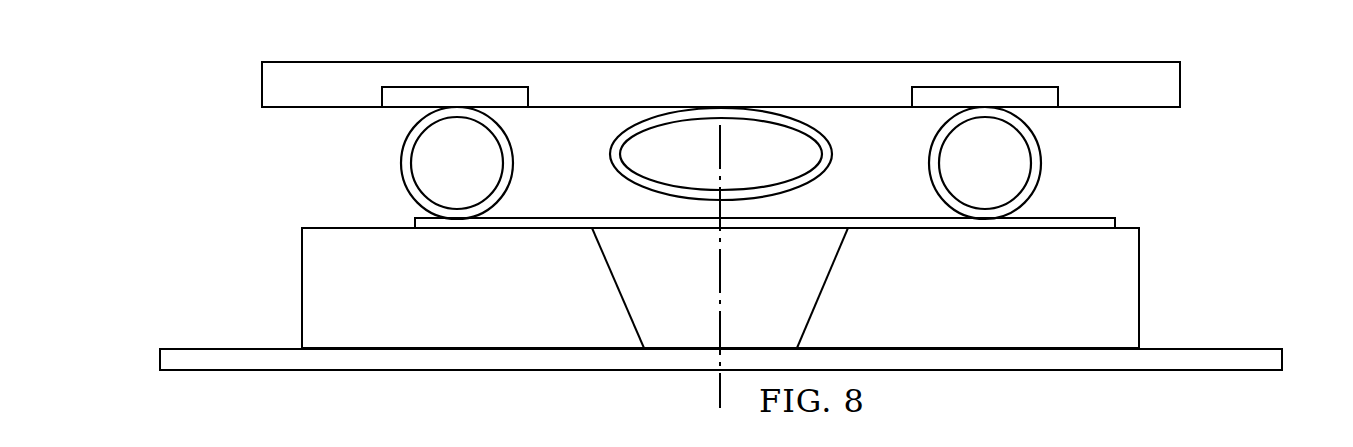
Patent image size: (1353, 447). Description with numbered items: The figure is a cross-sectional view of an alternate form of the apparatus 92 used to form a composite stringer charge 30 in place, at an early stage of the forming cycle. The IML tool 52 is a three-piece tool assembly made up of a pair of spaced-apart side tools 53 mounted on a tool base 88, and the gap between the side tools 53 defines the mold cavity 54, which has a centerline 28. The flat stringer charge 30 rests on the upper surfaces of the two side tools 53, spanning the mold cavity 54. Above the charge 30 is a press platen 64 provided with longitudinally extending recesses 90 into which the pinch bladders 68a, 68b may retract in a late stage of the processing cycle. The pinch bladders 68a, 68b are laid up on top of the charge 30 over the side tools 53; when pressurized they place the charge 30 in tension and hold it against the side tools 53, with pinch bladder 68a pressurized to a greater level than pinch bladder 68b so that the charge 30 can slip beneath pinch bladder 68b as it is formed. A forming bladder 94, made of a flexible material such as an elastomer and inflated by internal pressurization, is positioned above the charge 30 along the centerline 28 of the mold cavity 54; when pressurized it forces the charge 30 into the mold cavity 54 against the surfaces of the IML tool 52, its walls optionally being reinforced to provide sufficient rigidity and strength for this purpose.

The centerline 28 is at (718, 393).
The stringer charge 30 is at (570, 218).
The IML tool 52 is at (767, 282).
The side tools 53 is at (302, 290).
The mold cavity 54 is at (649, 287).
The press platen 64 is at (262, 86).
The pinch bladder 68a is at (401, 163).
The pinch bladder 68b is at (1041, 163).
The tool base 88 is at (160, 358).
The recesses 90 is at (412, 98).
The apparatus 92 is at (1284, 136).
The forming bladder 94 is at (832, 152).